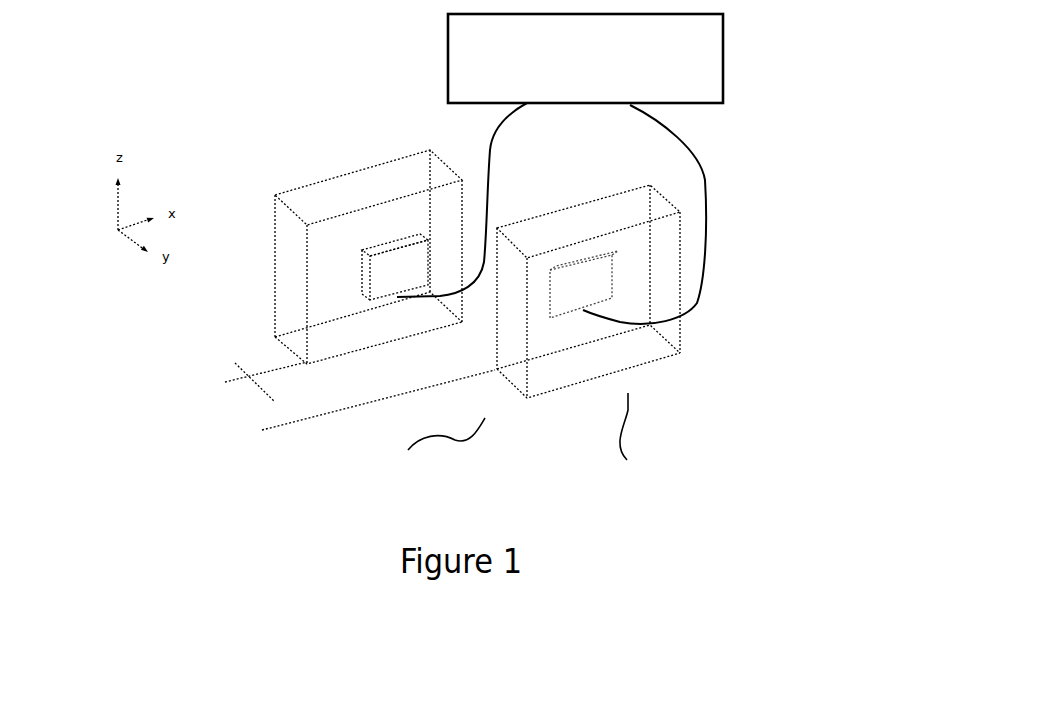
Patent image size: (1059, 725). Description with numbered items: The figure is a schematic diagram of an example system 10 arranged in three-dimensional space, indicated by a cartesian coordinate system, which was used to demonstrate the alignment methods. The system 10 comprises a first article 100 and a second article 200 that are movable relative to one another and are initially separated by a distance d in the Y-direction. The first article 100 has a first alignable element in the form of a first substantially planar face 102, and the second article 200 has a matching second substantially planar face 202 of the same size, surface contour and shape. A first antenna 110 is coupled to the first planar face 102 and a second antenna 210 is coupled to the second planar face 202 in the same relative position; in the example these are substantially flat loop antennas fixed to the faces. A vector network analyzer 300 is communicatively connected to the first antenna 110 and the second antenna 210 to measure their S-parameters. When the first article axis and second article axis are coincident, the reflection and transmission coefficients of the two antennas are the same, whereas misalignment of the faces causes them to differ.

The system 10 is at (288, 100).
The first article 100 is at (260, 323).
The first substantially planar face 102 is at (340, 230).
The first antenna 110 is at (398, 258).
The second article 200 is at (666, 372).
The second substantially planar face 202 is at (622, 178).
The second antenna 210 is at (602, 280).
The vector network analyzer 300 is at (735, 59).